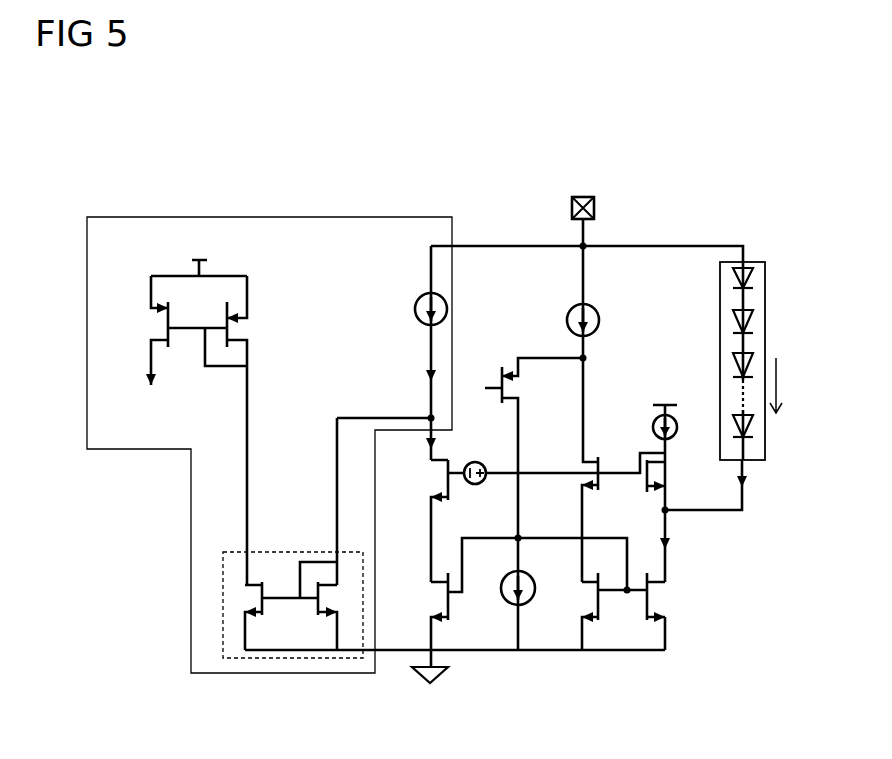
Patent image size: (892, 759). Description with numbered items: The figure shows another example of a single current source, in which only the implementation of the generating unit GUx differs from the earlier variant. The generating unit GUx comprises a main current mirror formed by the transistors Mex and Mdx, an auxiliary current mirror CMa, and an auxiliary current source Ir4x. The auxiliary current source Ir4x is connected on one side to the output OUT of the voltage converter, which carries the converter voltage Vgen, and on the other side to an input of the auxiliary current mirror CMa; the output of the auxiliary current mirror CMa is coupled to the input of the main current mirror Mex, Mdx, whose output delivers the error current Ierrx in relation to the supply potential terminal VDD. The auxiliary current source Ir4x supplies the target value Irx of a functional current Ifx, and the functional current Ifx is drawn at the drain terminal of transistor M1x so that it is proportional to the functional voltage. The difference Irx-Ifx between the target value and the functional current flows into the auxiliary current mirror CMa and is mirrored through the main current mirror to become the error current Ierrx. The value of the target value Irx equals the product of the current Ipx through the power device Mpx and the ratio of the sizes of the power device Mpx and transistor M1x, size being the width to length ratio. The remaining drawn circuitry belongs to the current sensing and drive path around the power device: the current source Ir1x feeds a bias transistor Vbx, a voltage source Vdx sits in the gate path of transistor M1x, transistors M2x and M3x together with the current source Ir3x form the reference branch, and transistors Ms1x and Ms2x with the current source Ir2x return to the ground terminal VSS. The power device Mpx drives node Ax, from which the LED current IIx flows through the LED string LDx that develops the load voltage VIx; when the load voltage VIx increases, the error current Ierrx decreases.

The generating unit GUx is at (296, 216).
The supply potential terminal VDD is at (200, 255).
The transistor of the main current mirror Mex is at (165, 330).
The transistor of the main current mirror Mdx is at (250, 430).
The error current Ierrx is at (155, 396).
The auxiliary current source Ir4x is at (400, 353).
The target value Irx is at (412, 372).
The functional current Ifx is at (413, 450).
The difference between the target value and the functional current Irx-Ifx is at (378, 404).
The generated voltage rail Vgen is at (587, 241).
The output of the voltage converter OUT is at (581, 208).
The current source Ir1x is at (558, 354).
The bias transistor Vbx is at (518, 504).
The voltage source Vdx is at (556, 460).
The transistor M1x is at (421, 521).
The transistor Ms1x is at (505, 602).
The ground terminal VSS is at (440, 679).
The current source Ir2x is at (531, 603).
The transistor M2x is at (562, 516).
The transistor Ms2x is at (591, 611).
The power device Mpx is at (681, 580).
The current through the power device Ipx is at (682, 548).
The transistor M3x is at (678, 477).
The current source Ir3x is at (640, 422).
The node Ax is at (668, 513).
The LED current IIx is at (756, 489).
The LED string LDx is at (767, 361).
The load voltage VIx is at (794, 385).
The auxiliary current mirror CMa is at (310, 659).